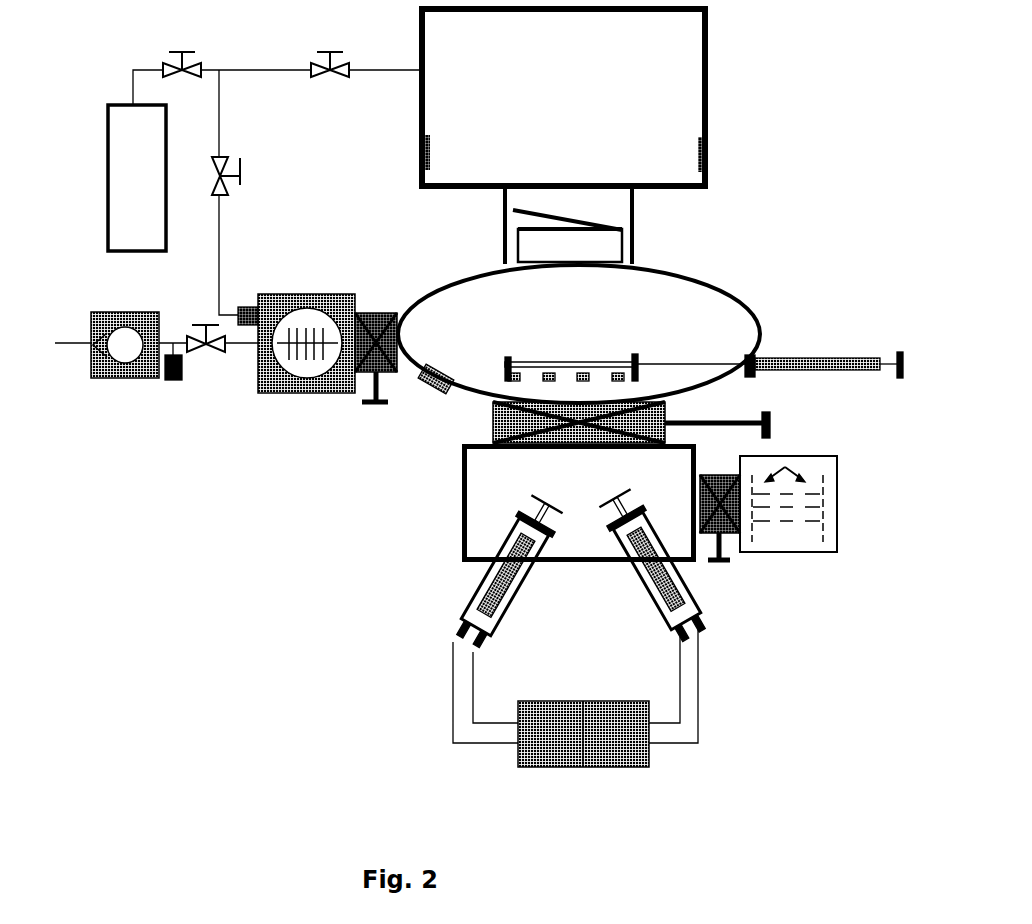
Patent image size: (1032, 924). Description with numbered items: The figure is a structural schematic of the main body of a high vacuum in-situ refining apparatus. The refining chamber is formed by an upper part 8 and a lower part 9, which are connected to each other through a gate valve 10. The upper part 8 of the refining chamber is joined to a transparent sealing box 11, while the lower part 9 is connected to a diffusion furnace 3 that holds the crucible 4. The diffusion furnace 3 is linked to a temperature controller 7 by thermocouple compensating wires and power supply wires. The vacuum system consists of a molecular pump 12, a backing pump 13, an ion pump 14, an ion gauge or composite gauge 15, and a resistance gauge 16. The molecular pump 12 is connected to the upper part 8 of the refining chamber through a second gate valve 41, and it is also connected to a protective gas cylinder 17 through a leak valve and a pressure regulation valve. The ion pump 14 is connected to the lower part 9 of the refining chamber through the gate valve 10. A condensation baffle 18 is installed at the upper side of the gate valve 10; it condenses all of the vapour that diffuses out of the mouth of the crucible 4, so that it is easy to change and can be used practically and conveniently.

The diffusion furnace 3 is at (458, 593).
The crucible 4 is at (513, 513).
The temperature controller 7 is at (495, 752).
The upper part of the refining chamber 8 is at (477, 385).
The lower part of the refining chamber 9 is at (495, 482).
The gate valve 10 is at (787, 418).
The transparent sealing box 11 is at (678, 85).
The molecular pump 12 is at (310, 395).
The backing pump 13 is at (128, 388).
The ion pump 14 is at (788, 562).
The ion gauge or composite gauge 15 is at (420, 403).
The resistance gauge 16 is at (184, 387).
The protective gas cylinder 17 is at (130, 182).
The condensation baffle 18 is at (605, 355).
The gate valve 41 is at (367, 313).